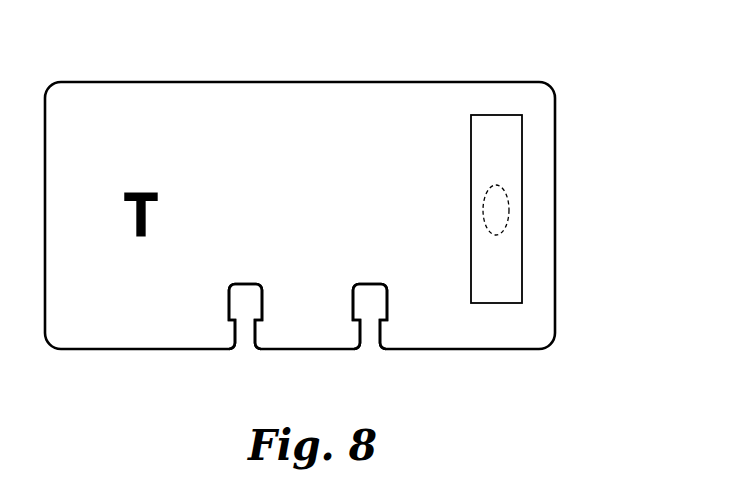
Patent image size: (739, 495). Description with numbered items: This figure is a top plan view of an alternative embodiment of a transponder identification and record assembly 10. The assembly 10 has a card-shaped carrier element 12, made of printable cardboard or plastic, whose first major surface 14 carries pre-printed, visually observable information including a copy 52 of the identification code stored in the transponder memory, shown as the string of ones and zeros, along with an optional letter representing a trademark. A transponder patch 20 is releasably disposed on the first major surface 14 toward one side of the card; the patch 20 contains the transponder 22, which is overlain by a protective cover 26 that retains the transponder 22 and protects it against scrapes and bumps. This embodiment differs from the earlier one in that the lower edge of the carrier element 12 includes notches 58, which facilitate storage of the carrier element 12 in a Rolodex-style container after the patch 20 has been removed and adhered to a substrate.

The transponder identification and record assembly 10 is at (556, 76).
The carrier element 12 is at (556, 140).
The first major surface 14 is at (414, 123).
The transponder patch 20 is at (492, 114).
The transponder 22 is at (493, 210).
The protective cover 26 is at (494, 293).
The copy 52 is at (328, 140).
The notches 58 is at (370, 336).